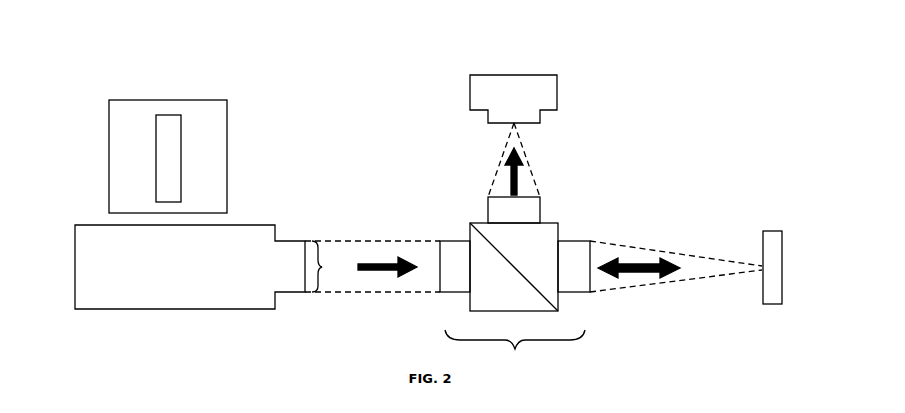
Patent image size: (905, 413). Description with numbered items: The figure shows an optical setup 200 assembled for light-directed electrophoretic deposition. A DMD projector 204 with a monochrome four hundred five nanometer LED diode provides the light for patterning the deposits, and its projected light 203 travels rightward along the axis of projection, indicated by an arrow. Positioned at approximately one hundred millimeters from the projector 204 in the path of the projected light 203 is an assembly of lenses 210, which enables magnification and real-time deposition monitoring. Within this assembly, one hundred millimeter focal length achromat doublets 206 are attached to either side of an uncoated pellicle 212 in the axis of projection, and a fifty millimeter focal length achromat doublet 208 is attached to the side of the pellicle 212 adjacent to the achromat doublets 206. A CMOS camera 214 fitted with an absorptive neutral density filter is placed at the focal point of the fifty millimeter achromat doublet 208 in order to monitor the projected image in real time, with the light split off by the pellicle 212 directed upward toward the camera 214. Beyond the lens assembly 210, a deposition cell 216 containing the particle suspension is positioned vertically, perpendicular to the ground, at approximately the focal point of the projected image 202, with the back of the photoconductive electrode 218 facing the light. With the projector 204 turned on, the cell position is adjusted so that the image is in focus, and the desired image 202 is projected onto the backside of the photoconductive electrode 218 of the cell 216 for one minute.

The optical setup 200 is at (88, 56).
The projected image 202 is at (194, 159).
The projected light 203 is at (329, 274).
The DMD projector 204 is at (164, 274).
The achromat doublets 206 is at (446, 241).
The achromat doublet 208 is at (504, 219).
The assembly of lenses 210 is at (515, 349).
The pellicle 212 is at (490, 296).
The CMOS camera 214 is at (504, 106).
The deposition cell 216 is at (783, 247).
The photoconductive electrode 218 is at (762, 260).